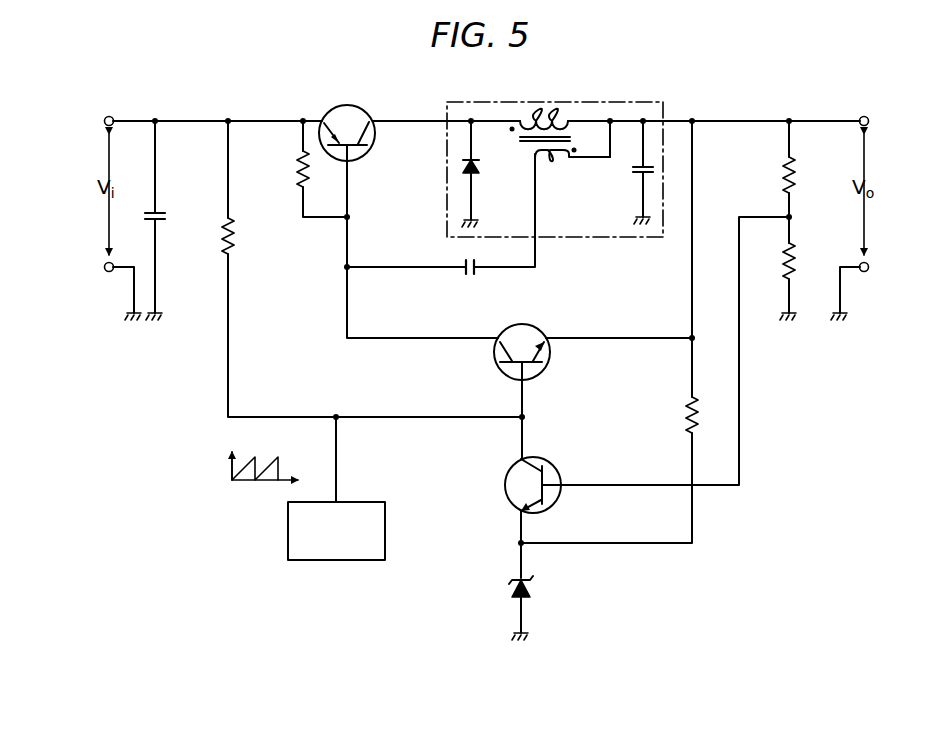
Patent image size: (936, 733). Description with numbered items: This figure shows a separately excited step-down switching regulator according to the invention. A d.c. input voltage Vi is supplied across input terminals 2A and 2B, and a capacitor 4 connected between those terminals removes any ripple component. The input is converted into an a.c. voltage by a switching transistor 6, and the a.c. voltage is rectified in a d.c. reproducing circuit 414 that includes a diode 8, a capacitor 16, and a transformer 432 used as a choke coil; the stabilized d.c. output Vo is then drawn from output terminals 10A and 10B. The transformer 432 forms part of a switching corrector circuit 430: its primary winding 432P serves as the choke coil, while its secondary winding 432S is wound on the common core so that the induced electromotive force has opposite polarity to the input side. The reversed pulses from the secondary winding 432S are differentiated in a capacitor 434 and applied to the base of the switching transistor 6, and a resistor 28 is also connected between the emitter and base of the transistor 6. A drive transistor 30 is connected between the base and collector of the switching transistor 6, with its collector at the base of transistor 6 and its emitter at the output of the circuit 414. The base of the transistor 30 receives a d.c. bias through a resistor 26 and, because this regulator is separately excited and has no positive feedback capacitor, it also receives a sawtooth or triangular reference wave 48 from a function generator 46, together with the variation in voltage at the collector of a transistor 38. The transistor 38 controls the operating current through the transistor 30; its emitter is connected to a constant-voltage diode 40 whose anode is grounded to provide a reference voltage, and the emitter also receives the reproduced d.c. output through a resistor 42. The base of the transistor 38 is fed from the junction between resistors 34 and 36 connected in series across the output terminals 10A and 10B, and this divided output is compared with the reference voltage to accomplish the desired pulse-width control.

The input terminal 2A is at (105, 121).
The input terminal 2B is at (105, 267).
The capacitor 4 is at (146, 216).
The switching transistor 6 is at (335, 112).
The d.c. reproducing circuit 8 is at (478, 168).
The output terminal 10A is at (868, 119).
The output terminal 10B is at (868, 267).
The capacitor 16 is at (628, 172).
The resistor 26 is at (233, 242).
The resistor 28 is at (310, 182).
The drive transistor 30 is at (497, 364).
The resistor 34 is at (787, 172).
The resistor 36 is at (793, 256).
The transistor 38 is at (506, 478).
The constant-voltage diode 40 is at (511, 591).
The resistor 42 is at (688, 418).
The function generator 46 is at (387, 546).
The sawtooth or triangular reference wave 48 is at (266, 451).
The d.c. reproducing circuit 414 is at (562, 240).
The switching corrector circuit 430 is at (505, 270).
The transformer 432 is at (555, 151).
The primary winding 432P is at (548, 115).
The secondary winding 432S is at (556, 155).
The capacitor 434 is at (466, 271).